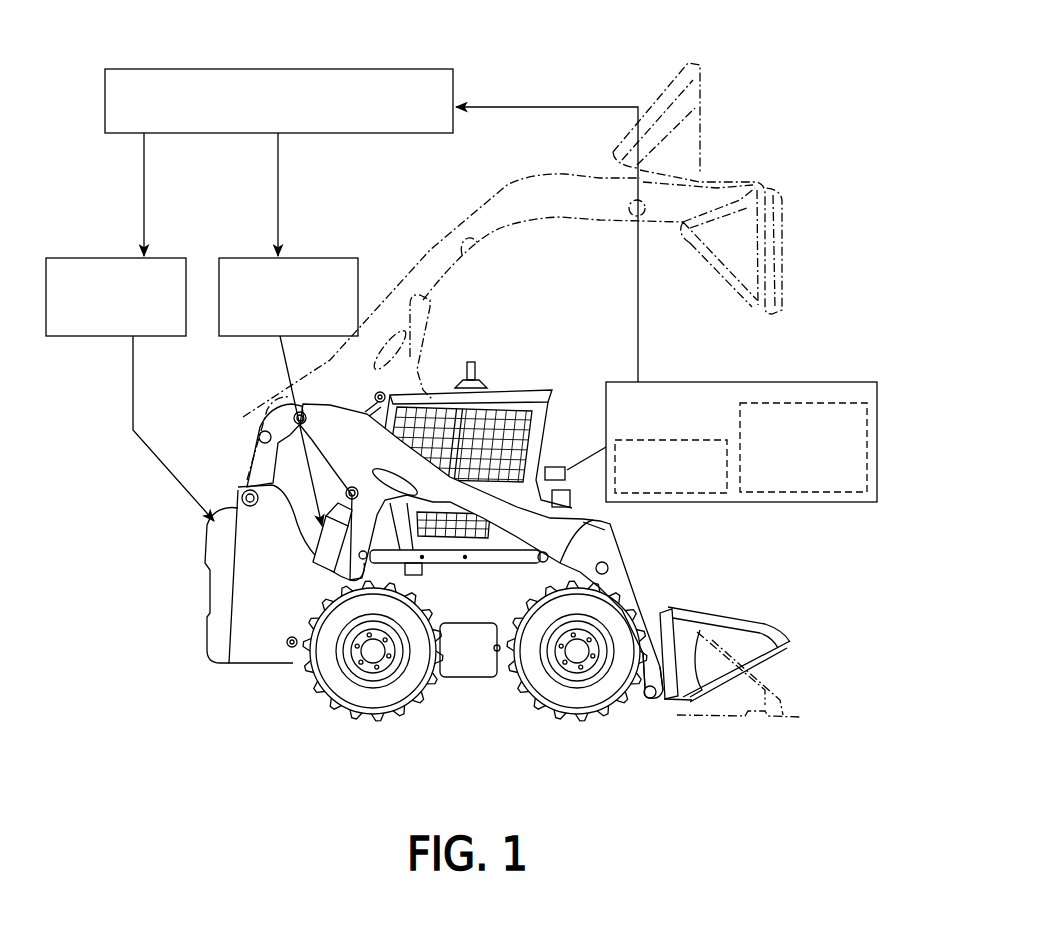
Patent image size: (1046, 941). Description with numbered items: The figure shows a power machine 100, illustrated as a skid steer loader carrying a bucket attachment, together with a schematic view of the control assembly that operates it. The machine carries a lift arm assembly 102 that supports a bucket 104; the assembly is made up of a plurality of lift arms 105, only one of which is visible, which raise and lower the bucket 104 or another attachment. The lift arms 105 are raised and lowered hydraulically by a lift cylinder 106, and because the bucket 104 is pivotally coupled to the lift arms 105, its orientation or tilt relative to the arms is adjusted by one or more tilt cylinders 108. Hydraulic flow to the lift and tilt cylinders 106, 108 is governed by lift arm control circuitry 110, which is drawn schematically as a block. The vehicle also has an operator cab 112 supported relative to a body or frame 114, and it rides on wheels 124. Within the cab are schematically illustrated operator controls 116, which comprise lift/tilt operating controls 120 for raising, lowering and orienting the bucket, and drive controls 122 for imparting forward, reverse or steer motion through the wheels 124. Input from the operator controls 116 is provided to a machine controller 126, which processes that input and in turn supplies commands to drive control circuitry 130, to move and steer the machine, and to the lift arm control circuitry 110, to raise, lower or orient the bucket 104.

The power machine 100 is at (814, 238).
The lift arm assembly 102 is at (516, 204).
The bucket 104 is at (680, 125).
The lift arm 105 is at (550, 218).
The lift cylinder 106 is at (322, 573).
The tilt cylinder 108 is at (640, 617).
The lift arm control circuitry 110 is at (303, 258).
The operator cab 112 is at (500, 383).
The body or frame 114 is at (450, 609).
The operator controls 116 is at (671, 381).
The lift/tilt operating controls 120 is at (725, 480).
The drive controls 122 is at (807, 403).
The wheels 124 is at (330, 672).
The machine controller 126 is at (352, 66).
The drive control circuitry 130 is at (63, 258).